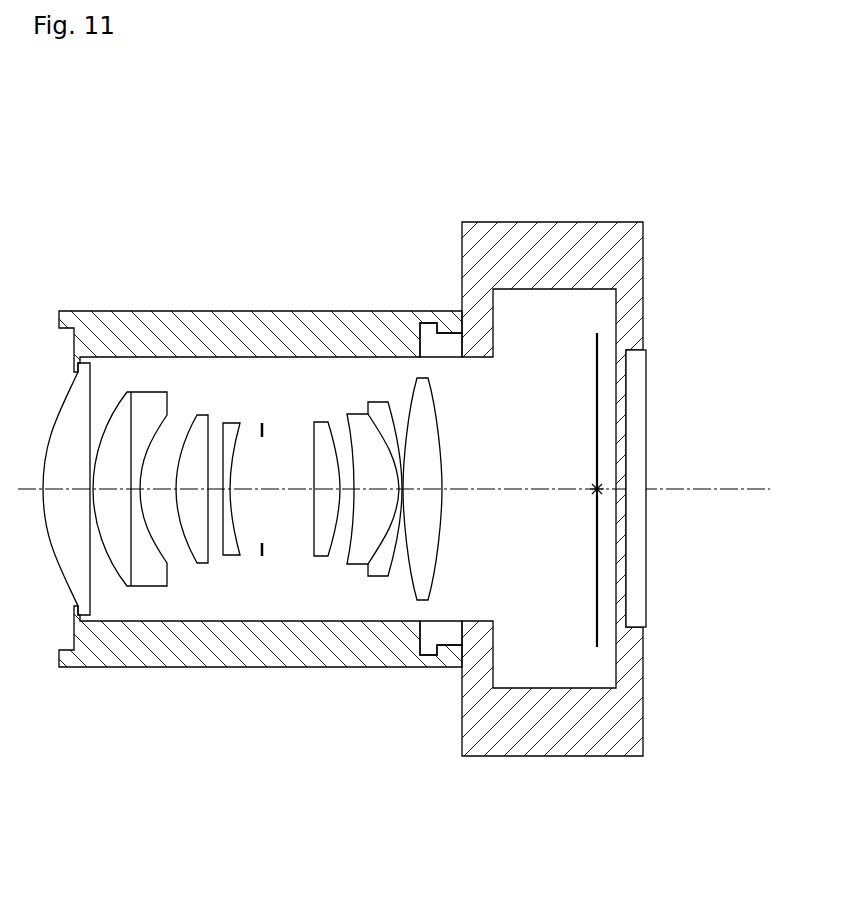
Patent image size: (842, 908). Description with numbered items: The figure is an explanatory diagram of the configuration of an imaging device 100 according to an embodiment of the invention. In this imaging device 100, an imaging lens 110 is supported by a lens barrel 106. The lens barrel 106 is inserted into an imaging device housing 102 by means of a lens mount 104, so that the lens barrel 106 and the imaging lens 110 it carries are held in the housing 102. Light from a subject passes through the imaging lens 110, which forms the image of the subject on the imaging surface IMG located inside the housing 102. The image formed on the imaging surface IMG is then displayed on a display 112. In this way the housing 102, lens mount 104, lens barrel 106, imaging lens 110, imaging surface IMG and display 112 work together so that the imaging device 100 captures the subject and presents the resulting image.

The imaging device 100 is at (517, 150).
The imaging device housing 102 is at (571, 241).
The lens mount 104 is at (457, 321).
The lens barrel 106 is at (130, 333).
The imaging lens 110 is at (258, 386).
The display 112 is at (637, 378).
The imaging surface IMG is at (592, 577).